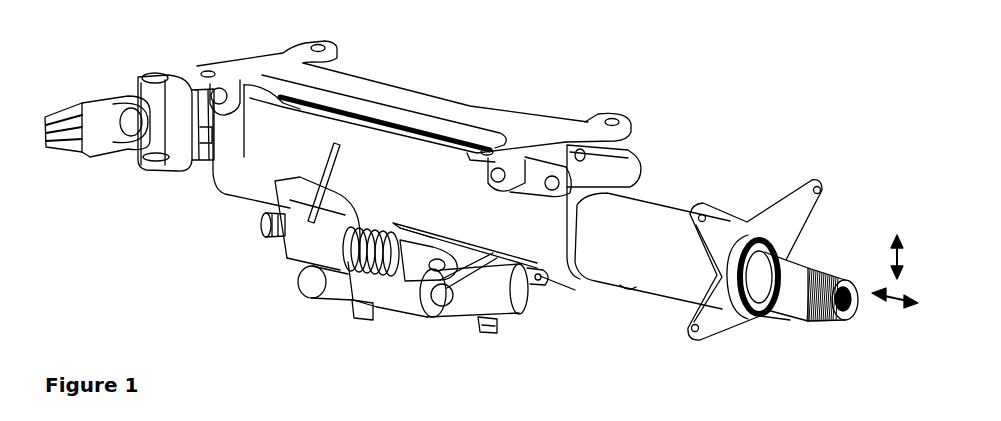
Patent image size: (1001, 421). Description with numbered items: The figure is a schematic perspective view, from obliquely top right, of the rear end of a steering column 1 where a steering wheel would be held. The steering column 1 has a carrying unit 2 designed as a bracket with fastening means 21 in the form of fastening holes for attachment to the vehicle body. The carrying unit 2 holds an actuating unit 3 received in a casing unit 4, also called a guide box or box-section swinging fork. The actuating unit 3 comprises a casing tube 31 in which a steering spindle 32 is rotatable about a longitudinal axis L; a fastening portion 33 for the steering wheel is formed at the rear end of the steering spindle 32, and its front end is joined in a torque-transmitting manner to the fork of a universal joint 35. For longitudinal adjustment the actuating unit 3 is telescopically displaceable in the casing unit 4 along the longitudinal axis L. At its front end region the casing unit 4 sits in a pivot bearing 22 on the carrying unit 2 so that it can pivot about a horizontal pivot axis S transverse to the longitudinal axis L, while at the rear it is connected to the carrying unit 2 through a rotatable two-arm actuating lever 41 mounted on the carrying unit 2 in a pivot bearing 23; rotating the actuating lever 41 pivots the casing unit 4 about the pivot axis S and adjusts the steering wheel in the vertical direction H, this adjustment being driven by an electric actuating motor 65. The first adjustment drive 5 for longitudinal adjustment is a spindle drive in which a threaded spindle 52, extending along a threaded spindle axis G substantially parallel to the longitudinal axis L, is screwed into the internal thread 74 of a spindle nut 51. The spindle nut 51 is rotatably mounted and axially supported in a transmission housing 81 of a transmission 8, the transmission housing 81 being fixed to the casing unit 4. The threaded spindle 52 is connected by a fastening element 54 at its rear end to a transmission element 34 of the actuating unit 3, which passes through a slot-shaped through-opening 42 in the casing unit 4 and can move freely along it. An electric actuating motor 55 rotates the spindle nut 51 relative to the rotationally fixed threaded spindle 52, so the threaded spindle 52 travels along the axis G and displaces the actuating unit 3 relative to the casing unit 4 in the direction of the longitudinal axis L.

The steering column 1 is at (523, 49).
The carrying unit 2 is at (427, 107).
The fastening means 21 is at (317, 43).
The pivot bearing 22 is at (219, 88).
The pivot bearing 23 is at (553, 178).
The actuating unit 3 is at (712, 186).
The casing tube 31 is at (637, 217).
The steering spindle 32 is at (795, 266).
The fastening portion 33 is at (821, 322).
The transmission element 34 is at (503, 283).
The universal joint 35 is at (129, 62).
The casing unit 4 is at (250, 170).
The actuating lever 41 is at (600, 151).
The through-opening 42 is at (553, 287).
The first adjustment drive 5 is at (286, 305).
The spindle nut 51 is at (355, 278).
The threaded spindle 52 is at (383, 274).
The fastening element 54 is at (427, 270).
The electric actuating motor 55 is at (403, 287).
The electric actuating motor 65 is at (483, 318).
The internal thread 74 is at (343, 265).
The transmission 8 is at (284, 279).
The transmission housing 81 is at (312, 240).
The threaded spindle axis G is at (260, 226).
The pivot axis S is at (352, 65).
The vertical direction H is at (891, 256).
The longitudinal axis L is at (900, 318).